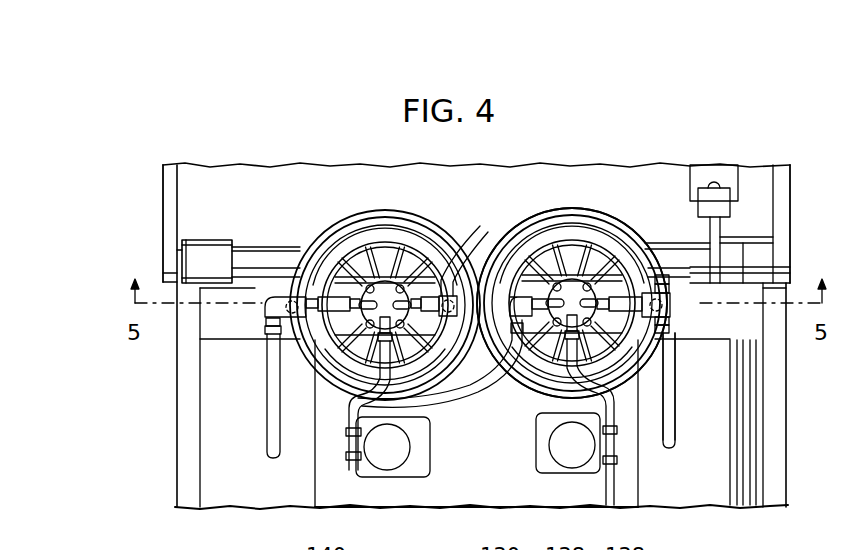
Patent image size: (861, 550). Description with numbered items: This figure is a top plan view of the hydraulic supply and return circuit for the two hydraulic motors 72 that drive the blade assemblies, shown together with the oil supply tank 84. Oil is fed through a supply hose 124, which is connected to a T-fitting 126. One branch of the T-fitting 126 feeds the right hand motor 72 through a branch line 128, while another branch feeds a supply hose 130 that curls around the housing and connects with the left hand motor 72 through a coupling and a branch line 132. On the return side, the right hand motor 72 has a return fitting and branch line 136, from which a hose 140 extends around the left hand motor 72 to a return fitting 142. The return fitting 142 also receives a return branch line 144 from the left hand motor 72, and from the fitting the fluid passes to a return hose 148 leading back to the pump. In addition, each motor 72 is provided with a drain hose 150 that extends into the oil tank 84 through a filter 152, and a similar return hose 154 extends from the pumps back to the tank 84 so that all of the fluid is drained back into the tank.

The hydraulic motor 72 is at (383, 287).
The supply tank 84 is at (467, 482).
The supply hose 124 is at (668, 437).
The T-fitting 126 is at (673, 310).
The branch line 128 is at (650, 345).
The supply hose 130 is at (565, 198).
The branch line 132 is at (438, 265).
The return fitting and branch line 136 is at (523, 375).
The hose 140 is at (447, 407).
The return fitting 142 is at (288, 297).
The return branch line 144 is at (343, 297).
The return hose 148 is at (269, 440).
The drain hose 150 is at (340, 418).
The filter 152 is at (363, 470).
The return hose 154 is at (612, 490).